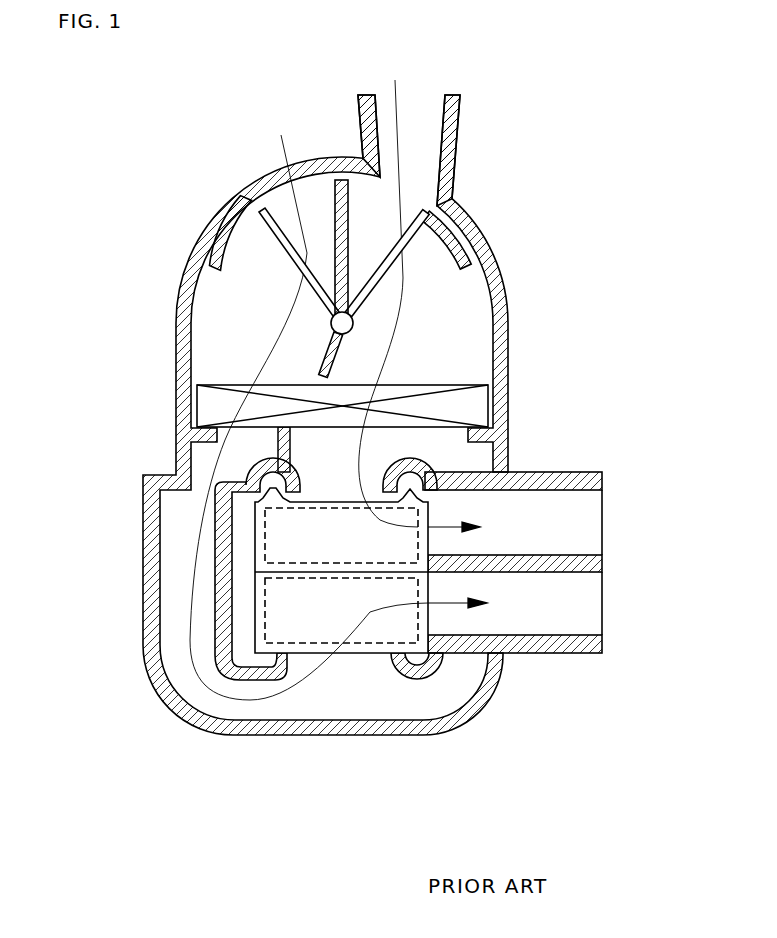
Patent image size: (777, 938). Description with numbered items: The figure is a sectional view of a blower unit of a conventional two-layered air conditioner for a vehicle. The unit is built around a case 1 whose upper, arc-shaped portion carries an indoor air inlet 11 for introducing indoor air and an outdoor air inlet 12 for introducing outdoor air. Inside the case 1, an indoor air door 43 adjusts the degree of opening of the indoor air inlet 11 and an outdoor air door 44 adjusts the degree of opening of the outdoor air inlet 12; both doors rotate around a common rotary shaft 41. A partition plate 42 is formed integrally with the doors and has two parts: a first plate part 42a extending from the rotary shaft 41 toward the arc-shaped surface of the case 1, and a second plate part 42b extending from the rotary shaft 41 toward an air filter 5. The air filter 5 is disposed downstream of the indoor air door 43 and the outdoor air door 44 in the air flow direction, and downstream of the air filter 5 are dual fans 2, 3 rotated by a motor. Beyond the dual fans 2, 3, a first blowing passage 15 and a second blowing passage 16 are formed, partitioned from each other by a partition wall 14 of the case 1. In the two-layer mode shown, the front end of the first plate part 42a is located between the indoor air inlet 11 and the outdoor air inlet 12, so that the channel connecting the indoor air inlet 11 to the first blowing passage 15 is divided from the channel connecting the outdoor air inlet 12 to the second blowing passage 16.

The case 1 is at (197, 230).
The indoor air inlet 11 is at (277, 173).
The outdoor air inlet 12 is at (423, 120).
The dual fan 2 is at (342, 645).
The dual fan 3 is at (265, 535).
The air filter 5 is at (470, 400).
The partition wall 14 is at (603, 565).
The first blowing passage 15 is at (580, 610).
The second blowing passage 16 is at (578, 530).
The rotary shaft 41 is at (342, 323).
The partition plate 42 is at (608, 284).
The first plate part 42a is at (362, 286).
The second plate part 42b is at (338, 365).
The indoor air door 43 is at (243, 222).
The outdoor air door 44 is at (466, 213).